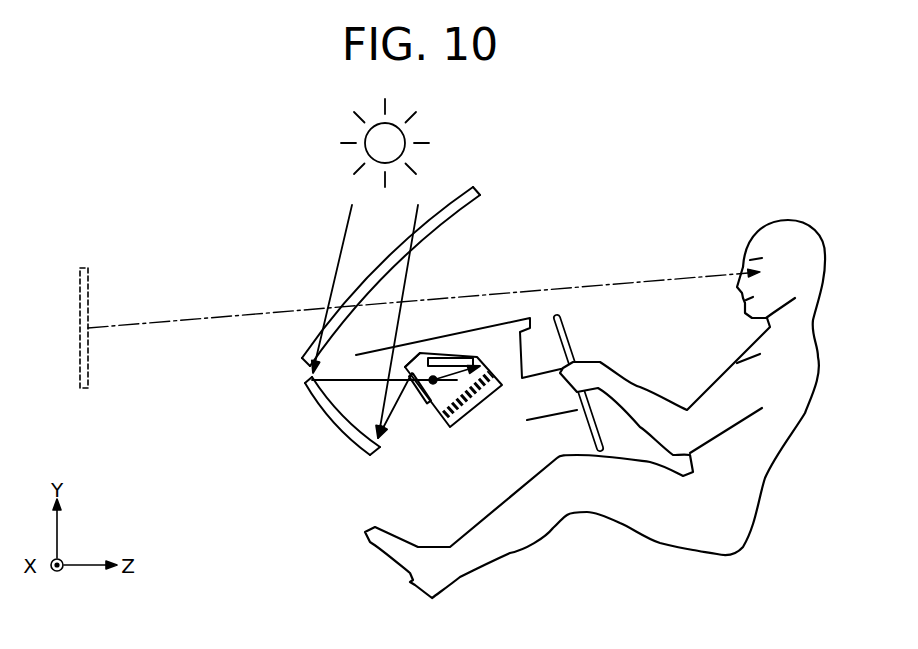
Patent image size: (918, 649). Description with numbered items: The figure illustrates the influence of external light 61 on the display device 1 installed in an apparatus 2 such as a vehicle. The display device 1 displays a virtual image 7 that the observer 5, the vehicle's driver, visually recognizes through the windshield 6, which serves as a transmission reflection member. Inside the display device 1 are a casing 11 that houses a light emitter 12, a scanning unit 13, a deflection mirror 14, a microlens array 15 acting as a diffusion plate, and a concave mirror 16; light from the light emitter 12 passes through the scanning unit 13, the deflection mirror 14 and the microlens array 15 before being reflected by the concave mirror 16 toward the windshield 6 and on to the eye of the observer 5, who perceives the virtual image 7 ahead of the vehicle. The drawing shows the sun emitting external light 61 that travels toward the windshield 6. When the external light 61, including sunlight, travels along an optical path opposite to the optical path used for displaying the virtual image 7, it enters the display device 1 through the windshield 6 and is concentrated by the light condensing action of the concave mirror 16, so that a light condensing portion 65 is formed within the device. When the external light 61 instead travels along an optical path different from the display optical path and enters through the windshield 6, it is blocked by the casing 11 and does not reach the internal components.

The display device 1 is at (337, 503).
The apparatus 2 is at (519, 148).
The observer 5 is at (788, 219).
The windshield 6 is at (478, 192).
The virtual image 7 is at (83, 267).
The casing 11 is at (476, 413).
The light emitter 12 is at (480, 357).
The scanning unit 13 is at (428, 388).
The deflection mirror 14 is at (461, 357).
The microlens array 15 is at (420, 412).
The concave mirror 16 is at (338, 425).
The external light 61 is at (340, 250).
The light condensing portion 65 is at (418, 354).